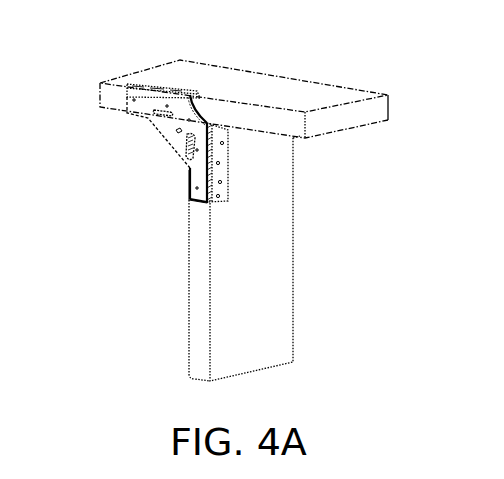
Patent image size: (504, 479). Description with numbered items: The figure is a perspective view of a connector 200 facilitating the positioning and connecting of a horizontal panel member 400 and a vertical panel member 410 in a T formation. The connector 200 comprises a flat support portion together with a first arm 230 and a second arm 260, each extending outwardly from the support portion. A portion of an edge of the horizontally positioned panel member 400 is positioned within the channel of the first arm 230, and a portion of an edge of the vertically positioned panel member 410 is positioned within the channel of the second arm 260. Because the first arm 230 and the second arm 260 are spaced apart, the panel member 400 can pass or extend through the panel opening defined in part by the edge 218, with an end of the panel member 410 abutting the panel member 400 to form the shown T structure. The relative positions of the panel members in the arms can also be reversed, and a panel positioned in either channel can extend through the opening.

The connector 200 is at (176, 147).
The edge 218 is at (200, 112).
The first arm 230 is at (145, 104).
The second arm 260 is at (186, 197).
The horizontal panel member 400 is at (300, 103).
The vertical panel member 410 is at (268, 275).